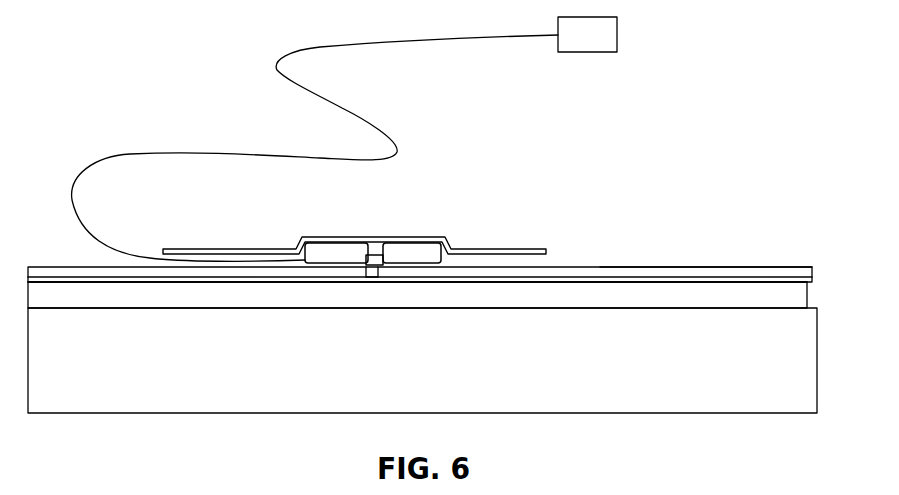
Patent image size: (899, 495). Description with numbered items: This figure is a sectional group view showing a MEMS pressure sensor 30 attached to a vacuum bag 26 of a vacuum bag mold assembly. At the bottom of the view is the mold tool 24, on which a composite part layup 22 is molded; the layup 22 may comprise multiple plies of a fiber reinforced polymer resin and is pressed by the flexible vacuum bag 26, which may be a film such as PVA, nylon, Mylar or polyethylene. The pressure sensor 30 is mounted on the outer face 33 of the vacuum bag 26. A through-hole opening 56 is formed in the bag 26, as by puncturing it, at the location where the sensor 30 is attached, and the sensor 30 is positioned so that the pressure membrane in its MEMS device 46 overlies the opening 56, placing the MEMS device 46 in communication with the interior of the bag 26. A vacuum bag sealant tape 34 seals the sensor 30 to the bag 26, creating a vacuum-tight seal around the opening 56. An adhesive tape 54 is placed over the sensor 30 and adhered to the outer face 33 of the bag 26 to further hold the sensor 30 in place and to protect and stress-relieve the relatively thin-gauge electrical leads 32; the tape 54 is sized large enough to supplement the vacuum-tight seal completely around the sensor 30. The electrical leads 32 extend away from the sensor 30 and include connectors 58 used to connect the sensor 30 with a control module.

The composite part layup 22 is at (53, 297).
The mold tool 24 is at (148, 380).
The vacuum bag 26 is at (643, 270).
The pressure sensor 30 is at (358, 217).
The electrical leads 32 is at (215, 152).
The outer face 33 is at (733, 268).
The vacuum bag sealant tape 34 is at (426, 255).
The MEMS device 46 is at (371, 255).
The adhesive tape 54 is at (500, 252).
The through-hole opening 56 is at (375, 273).
The connectors 58 is at (617, 33).